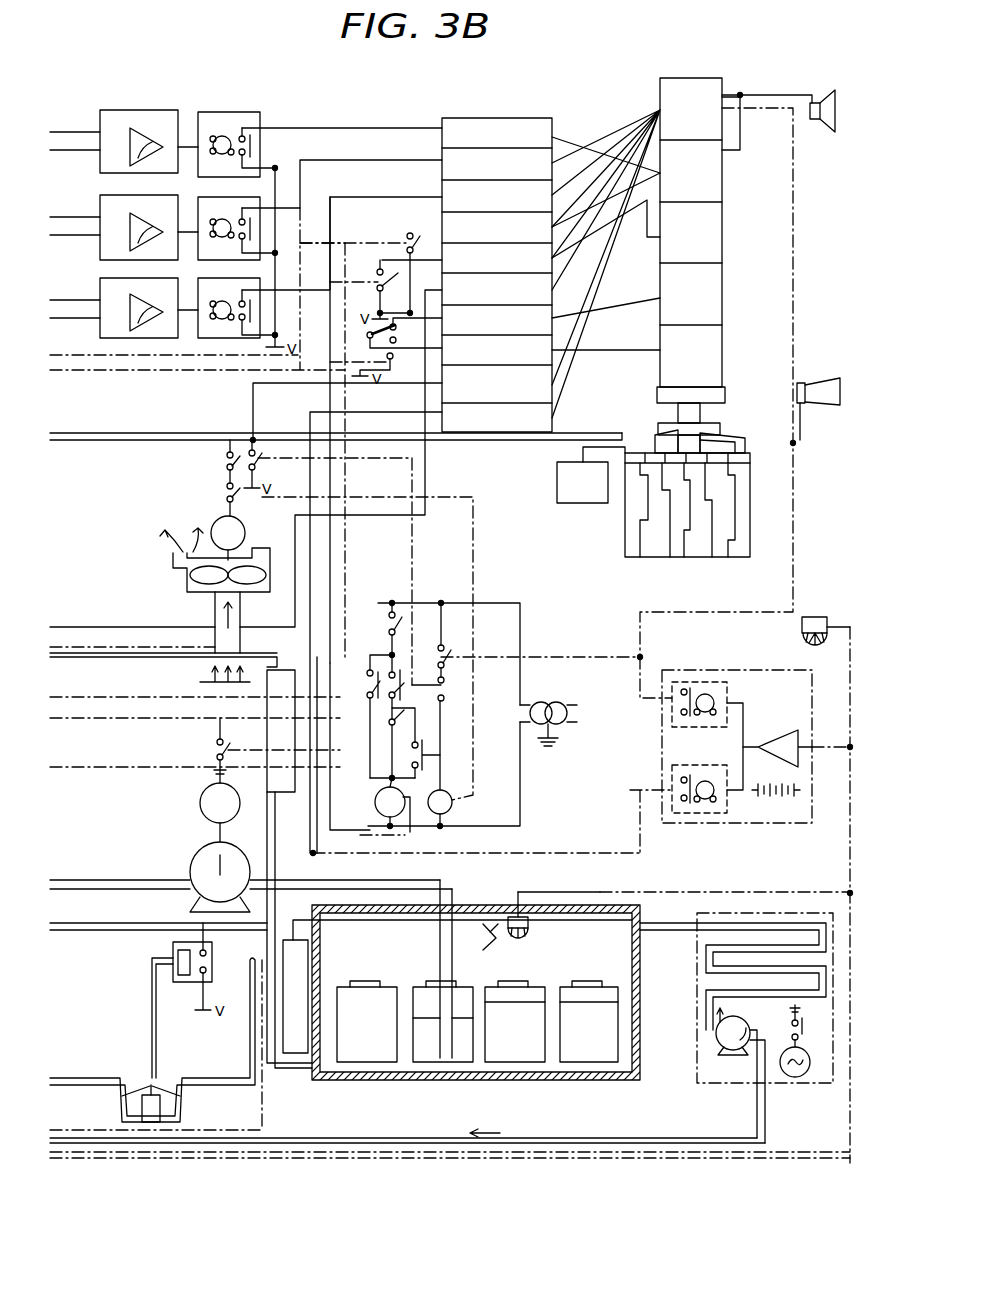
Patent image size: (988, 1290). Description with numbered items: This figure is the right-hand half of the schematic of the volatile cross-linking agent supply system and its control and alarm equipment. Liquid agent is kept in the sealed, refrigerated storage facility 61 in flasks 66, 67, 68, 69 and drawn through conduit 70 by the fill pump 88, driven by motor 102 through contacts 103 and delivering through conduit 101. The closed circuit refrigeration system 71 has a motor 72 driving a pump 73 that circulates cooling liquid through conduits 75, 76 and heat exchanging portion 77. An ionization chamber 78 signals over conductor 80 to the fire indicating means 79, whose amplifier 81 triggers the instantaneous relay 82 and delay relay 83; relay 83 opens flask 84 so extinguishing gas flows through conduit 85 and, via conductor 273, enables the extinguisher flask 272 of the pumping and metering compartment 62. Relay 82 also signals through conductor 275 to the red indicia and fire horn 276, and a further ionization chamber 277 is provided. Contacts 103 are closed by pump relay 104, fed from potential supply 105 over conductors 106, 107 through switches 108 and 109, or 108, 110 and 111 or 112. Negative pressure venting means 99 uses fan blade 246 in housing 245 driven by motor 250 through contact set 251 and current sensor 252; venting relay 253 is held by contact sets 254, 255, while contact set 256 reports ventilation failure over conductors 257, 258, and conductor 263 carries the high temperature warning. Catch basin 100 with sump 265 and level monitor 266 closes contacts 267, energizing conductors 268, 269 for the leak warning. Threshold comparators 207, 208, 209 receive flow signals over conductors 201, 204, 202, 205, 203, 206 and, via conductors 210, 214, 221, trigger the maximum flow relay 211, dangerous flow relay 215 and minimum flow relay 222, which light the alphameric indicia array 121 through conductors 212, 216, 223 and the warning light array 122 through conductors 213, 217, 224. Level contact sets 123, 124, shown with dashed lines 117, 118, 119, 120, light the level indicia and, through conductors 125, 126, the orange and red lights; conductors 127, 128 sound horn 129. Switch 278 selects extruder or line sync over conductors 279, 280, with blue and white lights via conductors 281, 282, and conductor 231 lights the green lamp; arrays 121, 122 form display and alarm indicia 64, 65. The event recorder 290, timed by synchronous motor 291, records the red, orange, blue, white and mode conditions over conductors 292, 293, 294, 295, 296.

The conductor 201 is at (90, 131).
The conductor 204 is at (95, 152).
The threshold comparator 207 is at (158, 112).
The conductor 210 is at (187, 140).
The maximum flow relay 211 is at (244, 112).
The conductor 212 is at (368, 130).
The conductor 202 is at (90, 218).
The conductor 205 is at (94, 238).
The threshold comparator 208 is at (148, 196).
The conductor 214 is at (186, 226).
The dangerous flow relay 215 is at (244, 202).
The conductor 216 is at (300, 188).
The conductor 203 is at (90, 300).
The conductor 206 is at (94, 322).
The threshold comparator 209 is at (156, 344).
The conductor 221 is at (186, 300).
The minimum flow relay 222 is at (240, 344).
The conductor 223 is at (340, 244).
The contact set 123 is at (428, 218).
The contacts 124 is at (404, 270).
The switch 278 is at (364, 332).
The conductor 279 is at (398, 340).
The conductor 280 is at (394, 360).
The alphameric indicia display array 121 is at (510, 107).
The conductor 213 is at (584, 142).
The conductor 217 is at (604, 136).
The conductor 224 is at (580, 186).
The conductor 125 is at (646, 190).
The conductor 126 is at (572, 262).
The conductor 281 is at (608, 318).
The conductor 282 is at (580, 358).
The conductor 258 is at (570, 376).
The conductor 269 is at (564, 396).
The warning light array 122 is at (760, 326).
The display and alarm indicia 65 is at (724, 242).
The conductor 127 is at (740, 128).
The conductor 128 is at (786, 94).
The horn 129 is at (838, 116).
The conductor 275 is at (794, 470).
The fire horn 276 is at (828, 378).
The ionization chamber 277 is at (828, 604).
The conductor 292 is at (728, 428).
The conductor 293 is at (735, 438).
The conductor 294 is at (740, 447).
The conductor 295 is at (656, 428).
The conductor 296 is at (656, 443).
The event recorder 290 is at (652, 558).
The synchronous motor 291 is at (574, 504).
The conductor 231 is at (120, 432).
The conductor 263 is at (118, 440).
The display and alarm indicia 64 is at (526, 442).
The conductor 257 is at (256, 408).
The conductor 268 is at (366, 412).
The current sensing device 252 is at (226, 467).
The contact set 256 is at (258, 454).
The relay contact set 251 is at (240, 504).
The motor 250 is at (246, 532).
The fan blade 246 is at (244, 568).
The ventilation fan housing 245 is at (172, 562).
The negative pressure venting means 99 is at (242, 610).
The dashed line 118 is at (334, 552).
The dashed line 120 is at (338, 578).
The conductor 107 is at (486, 604).
The conductor 106 is at (484, 826).
The switch 108 is at (384, 612).
The switch 109 is at (362, 676).
The switch 110 is at (404, 680).
The switch 111 is at (413, 743).
The switch 112 is at (439, 759).
The pump relay 104 is at (376, 798).
The venting relay 253 is at (450, 808).
The contact set 255 is at (436, 648).
The contact set 254 is at (446, 686).
The potential supply 105 is at (550, 702).
The conductor 273 is at (320, 850).
The dashed line 117 is at (94, 698).
The dashed line 119 is at (134, 768).
The set of contacts 103 is at (228, 748).
The motor means 102 is at (200, 806).
The fill pump 88 is at (196, 858).
The conduit 101 is at (110, 884).
The extinguisher flask 272 is at (276, 794).
The conduit 75 is at (80, 940).
The set of contacts 267 is at (208, 960).
The catch basin 100 is at (94, 1078).
The sump 265 is at (122, 1110).
The level monitor 266 is at (162, 1110).
The pumping and metering compartment 62 is at (262, 1106).
The flask 84 is at (297, 1054).
The storage facility for liquid cross-linking agent 61 is at (476, 1080).
The conduit 85 is at (360, 926).
The flask 66 is at (370, 982).
The flask 67 is at (408, 990).
The conduit 70 is at (452, 950).
The flask 68 is at (532, 984).
The flask 69 is at (604, 982).
The ionization chamber 78 is at (530, 930).
The conductor 80 is at (676, 895).
The fire indicating means 79 is at (684, 824).
The instantaneous operating relay 82 is at (730, 688).
The delay relay 83 is at (690, 770).
The amplifier 81 is at (796, 738).
The closed circuit refrigeration system 71 is at (786, 1086).
The conduit 76 is at (654, 932).
The heat exchanging portion 77 is at (812, 992).
The pump 73 is at (728, 1026).
The motor 72 is at (806, 1064).